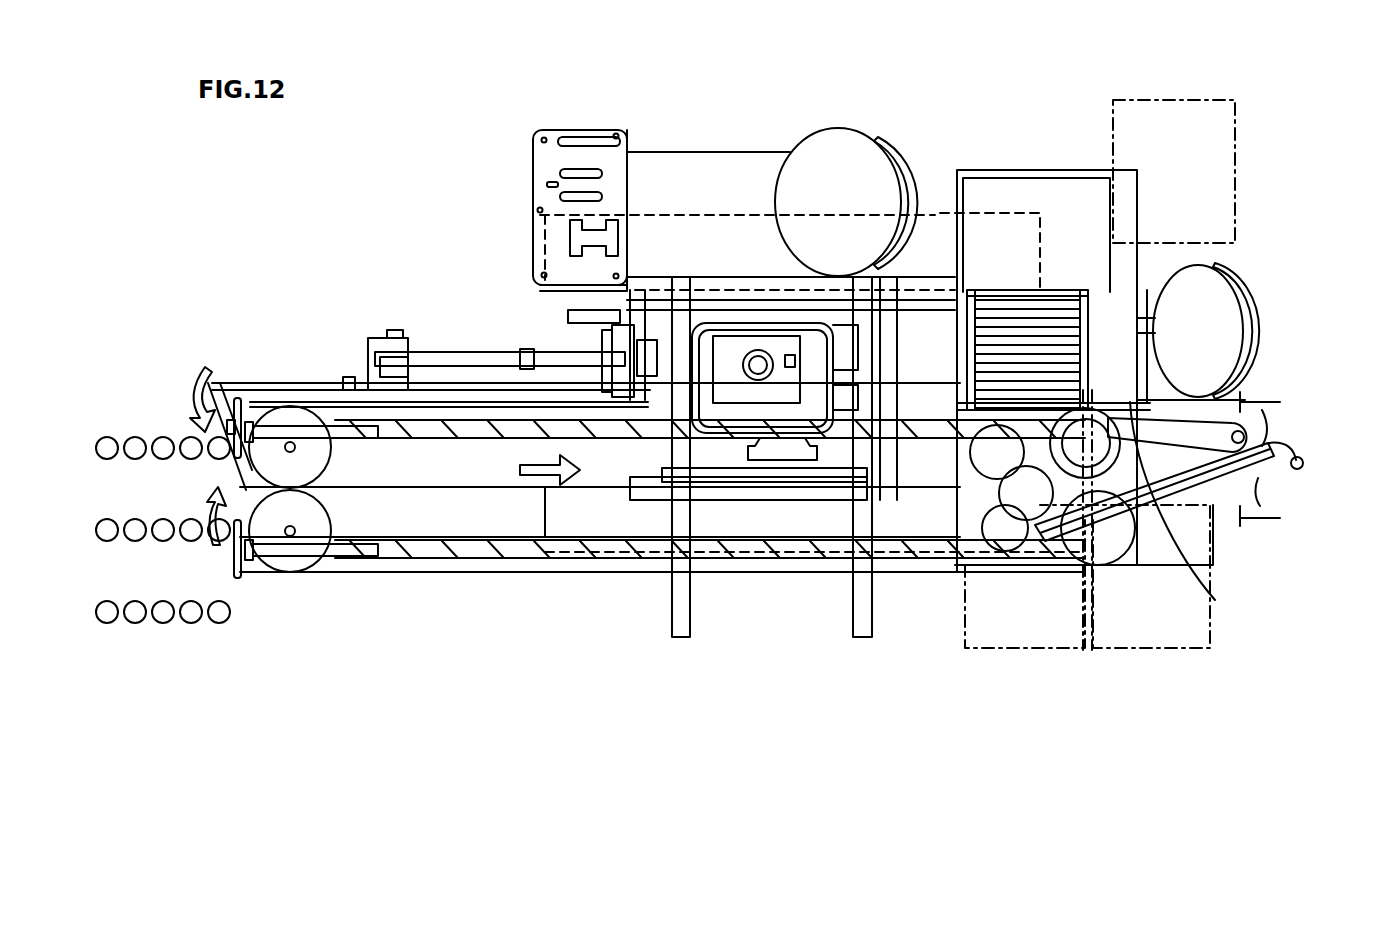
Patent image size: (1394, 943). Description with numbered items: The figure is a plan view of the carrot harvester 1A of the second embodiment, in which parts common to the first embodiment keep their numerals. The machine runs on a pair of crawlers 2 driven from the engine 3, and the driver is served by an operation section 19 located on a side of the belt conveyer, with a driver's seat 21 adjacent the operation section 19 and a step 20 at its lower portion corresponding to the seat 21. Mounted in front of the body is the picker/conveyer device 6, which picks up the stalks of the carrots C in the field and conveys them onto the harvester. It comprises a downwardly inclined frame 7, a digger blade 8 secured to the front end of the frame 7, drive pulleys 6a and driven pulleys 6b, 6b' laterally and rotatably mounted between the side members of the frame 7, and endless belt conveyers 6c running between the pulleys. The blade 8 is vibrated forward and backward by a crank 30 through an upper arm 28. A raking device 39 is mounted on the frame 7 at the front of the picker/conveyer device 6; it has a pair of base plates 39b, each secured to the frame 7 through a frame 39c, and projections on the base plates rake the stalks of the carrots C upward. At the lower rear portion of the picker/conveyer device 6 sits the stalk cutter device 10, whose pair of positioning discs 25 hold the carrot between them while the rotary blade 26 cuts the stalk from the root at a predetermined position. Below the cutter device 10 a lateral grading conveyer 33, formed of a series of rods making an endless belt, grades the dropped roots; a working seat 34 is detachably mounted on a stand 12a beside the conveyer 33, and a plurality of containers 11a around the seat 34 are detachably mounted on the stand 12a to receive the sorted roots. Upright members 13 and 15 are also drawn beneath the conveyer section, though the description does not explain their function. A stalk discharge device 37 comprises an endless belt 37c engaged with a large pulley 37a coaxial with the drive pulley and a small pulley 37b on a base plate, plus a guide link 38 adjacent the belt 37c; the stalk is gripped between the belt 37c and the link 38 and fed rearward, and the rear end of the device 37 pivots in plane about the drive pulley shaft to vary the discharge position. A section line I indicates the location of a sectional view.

The carrot harvester 1A is at (1040, 95).
The crawlers 2 is at (933, 213).
The engine 3 is at (850, 355).
The picker/conveyer device 6 is at (527, 585).
The drive pulley 6a is at (1118, 548).
The driven pulley 6b is at (311, 554).
The driven pulley 6b' is at (311, 409).
The endless belt conveyer 6c is at (485, 402).
The frame 7 is at (448, 430).
The digger blade 8 is at (243, 487).
The stalk cutter device 10 is at (1090, 410).
The containers 11a is at (1170, 128).
The stand 12a is at (1128, 287).
The support post 13 is at (855, 625).
The support post 15 is at (686, 600).
The operation section 19 is at (580, 130).
The step 20 is at (735, 152).
The driver's seat 21 is at (838, 130).
The positioning disc 25 is at (950, 402).
The rotary blade 26 is at (1036, 575).
The upper arm 28 is at (440, 352).
The crank 30 is at (600, 340).
The grading conveyer 33 is at (1060, 290).
The working seat 34 is at (1240, 312).
The stalk discharge device 37 is at (1305, 466).
The large pulley 37a is at (1206, 510).
The small pulley 37b is at (1288, 437).
The endless belt 37c is at (1189, 489).
The guide link 38 is at (1289, 460).
The raking device 39 is at (184, 398).
The base plate 39b is at (236, 405).
The frame 39c is at (281, 432).
The carrot C is at (108, 460).
The section line I is at (1269, 462).